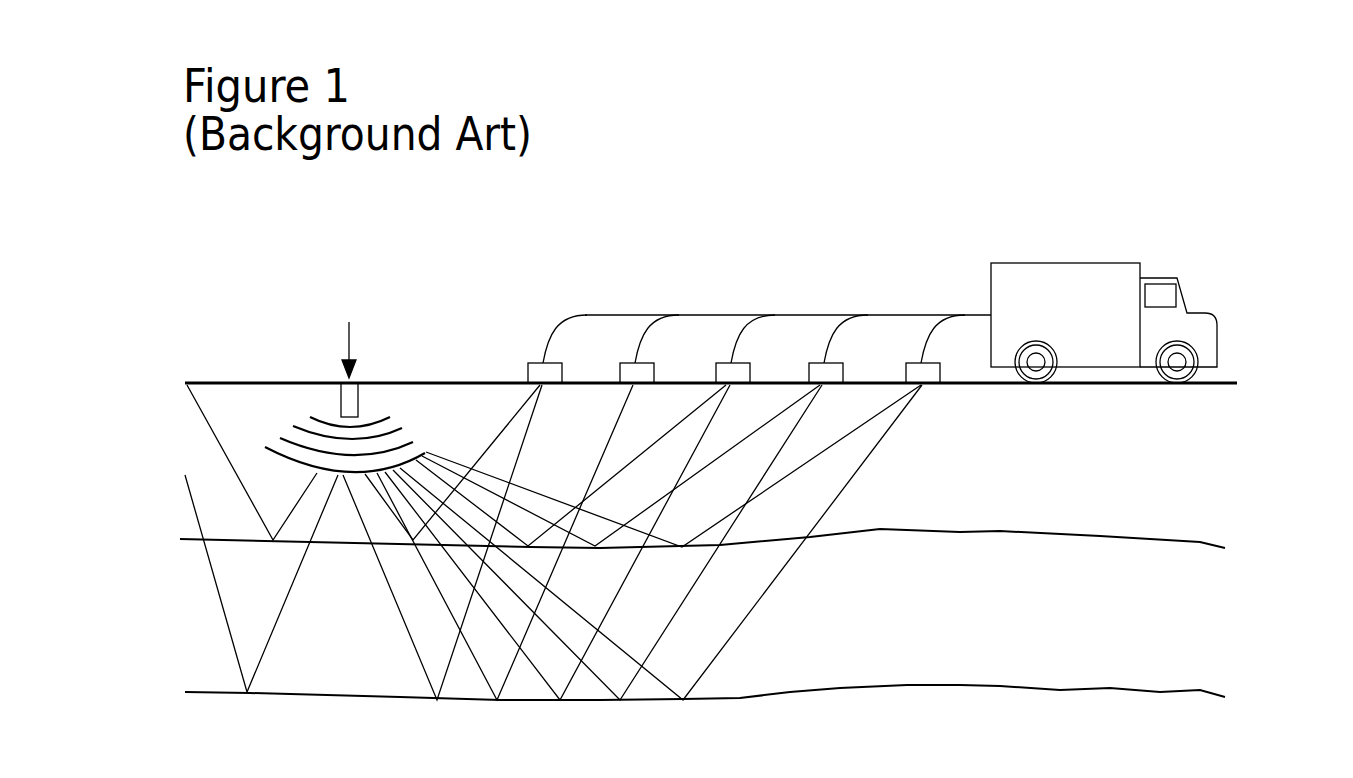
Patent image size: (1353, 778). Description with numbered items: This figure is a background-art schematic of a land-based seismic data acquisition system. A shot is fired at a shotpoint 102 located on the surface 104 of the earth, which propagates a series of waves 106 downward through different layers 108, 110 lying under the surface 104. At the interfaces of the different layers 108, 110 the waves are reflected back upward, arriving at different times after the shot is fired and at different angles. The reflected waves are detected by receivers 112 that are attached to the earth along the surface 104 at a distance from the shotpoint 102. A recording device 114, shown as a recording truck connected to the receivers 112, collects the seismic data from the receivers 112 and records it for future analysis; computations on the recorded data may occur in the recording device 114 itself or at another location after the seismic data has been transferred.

The shotpoint 102 is at (358, 272).
The surface 104 is at (1237, 385).
The waves 106 is at (292, 410).
The layer 108 is at (1225, 548).
The layer 110 is at (1225, 697).
The receivers 112 is at (762, 272).
The recording device 114 is at (1085, 216).